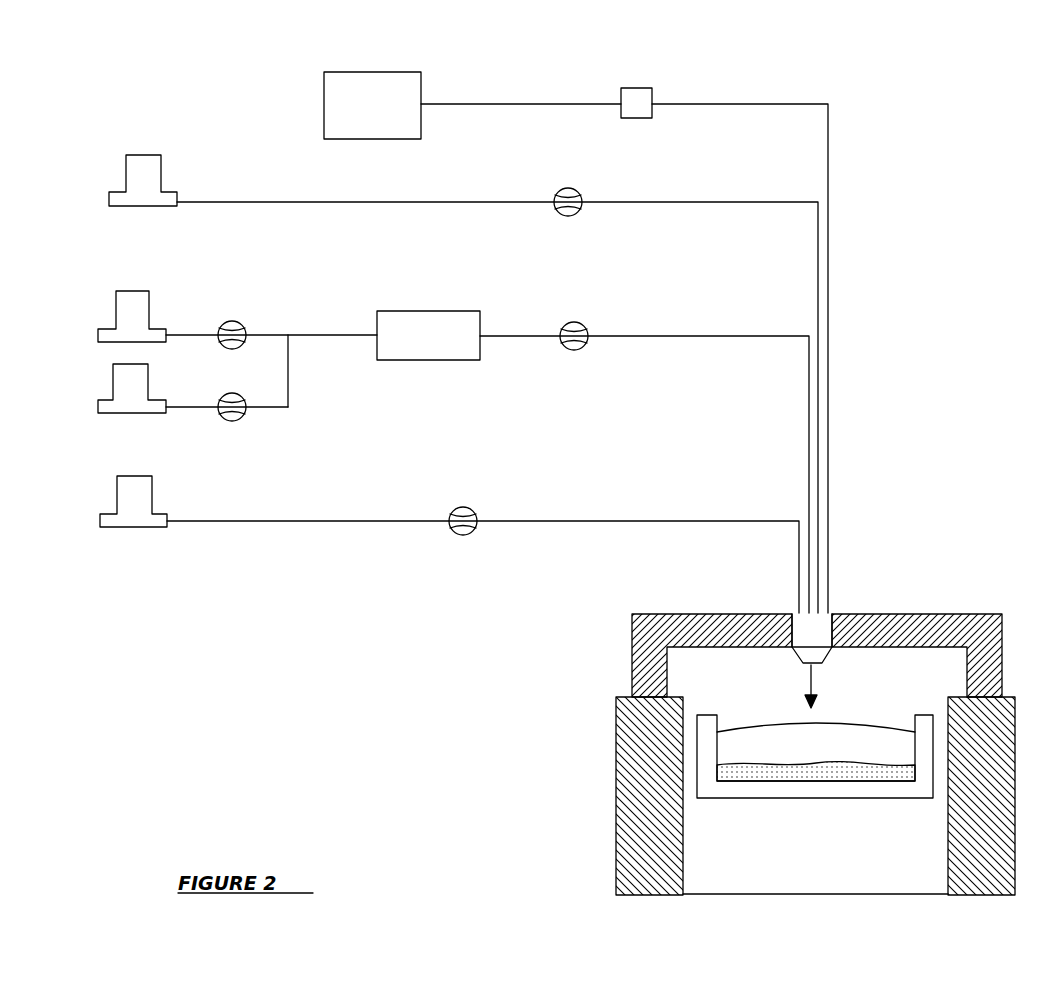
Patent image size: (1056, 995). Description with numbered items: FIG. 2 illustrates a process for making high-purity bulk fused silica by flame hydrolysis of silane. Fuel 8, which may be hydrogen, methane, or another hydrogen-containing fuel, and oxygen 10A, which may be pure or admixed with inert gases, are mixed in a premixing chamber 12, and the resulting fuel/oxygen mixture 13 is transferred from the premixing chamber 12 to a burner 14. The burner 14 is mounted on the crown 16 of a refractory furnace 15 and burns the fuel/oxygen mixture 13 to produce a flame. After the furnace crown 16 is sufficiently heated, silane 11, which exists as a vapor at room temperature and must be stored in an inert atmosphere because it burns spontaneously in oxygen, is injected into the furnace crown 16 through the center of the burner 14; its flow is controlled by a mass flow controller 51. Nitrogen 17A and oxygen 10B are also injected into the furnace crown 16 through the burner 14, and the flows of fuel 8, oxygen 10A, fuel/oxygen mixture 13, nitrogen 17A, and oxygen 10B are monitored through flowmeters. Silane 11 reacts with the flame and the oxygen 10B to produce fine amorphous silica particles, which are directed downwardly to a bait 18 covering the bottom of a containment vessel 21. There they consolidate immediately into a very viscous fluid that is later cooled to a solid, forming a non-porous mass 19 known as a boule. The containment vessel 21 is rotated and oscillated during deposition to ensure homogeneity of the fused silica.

The fuel 8 is at (125, 312).
The oxygen 10A is at (123, 403).
The oxygen 10B is at (122, 518).
The silane 11 is at (386, 115).
The premixing chamber 12 is at (436, 311).
The fuel/oxygen mixture 13 is at (444, 346).
The burner 14 is at (813, 635).
The refractory furnace 15 is at (615, 783).
The crown 16 is at (940, 614).
The nitrogen 17A is at (142, 173).
The bait 18 is at (840, 777).
The non-porous mass 19 is at (842, 725).
The containment vessel 21 is at (877, 798).
The mass flow controller 51 is at (653, 92).